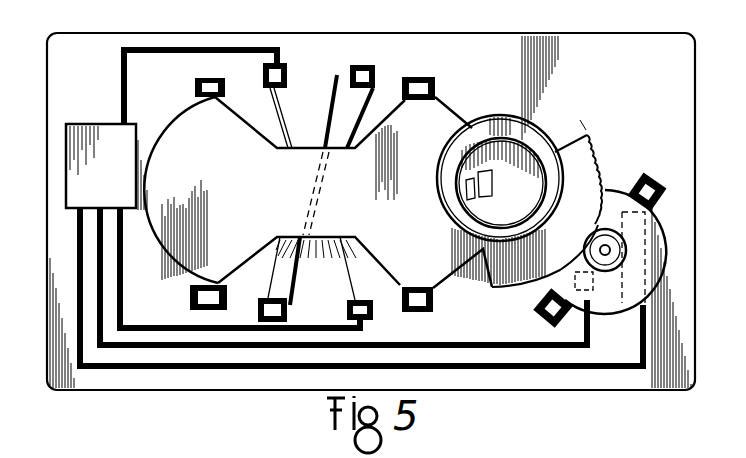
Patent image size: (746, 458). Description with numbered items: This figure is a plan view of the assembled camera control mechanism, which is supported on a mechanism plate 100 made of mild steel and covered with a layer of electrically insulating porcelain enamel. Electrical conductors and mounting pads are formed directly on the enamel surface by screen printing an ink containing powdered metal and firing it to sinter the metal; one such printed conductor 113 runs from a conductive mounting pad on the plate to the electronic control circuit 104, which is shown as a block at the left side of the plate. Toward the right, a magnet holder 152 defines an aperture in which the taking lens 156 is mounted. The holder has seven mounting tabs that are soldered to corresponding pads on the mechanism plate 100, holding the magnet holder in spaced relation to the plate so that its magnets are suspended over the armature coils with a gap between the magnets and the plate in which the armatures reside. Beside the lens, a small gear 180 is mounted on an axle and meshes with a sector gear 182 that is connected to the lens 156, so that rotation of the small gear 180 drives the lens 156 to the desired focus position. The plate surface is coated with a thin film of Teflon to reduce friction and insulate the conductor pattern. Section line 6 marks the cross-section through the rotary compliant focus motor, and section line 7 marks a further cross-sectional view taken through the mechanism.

The mechanism plate 100 is at (582, 44).
The electronic control circuit 104 is at (95, 122).
The conductor 113 is at (245, 47).
The magnet holder 152 is at (445, 118).
The taking lens 156 is at (481, 126).
The small gear 180 is at (605, 232).
The sector gear 182 is at (572, 152).
The section line 6- 6 is at (668, 168).
The section line 7- 7 is at (210, 110).